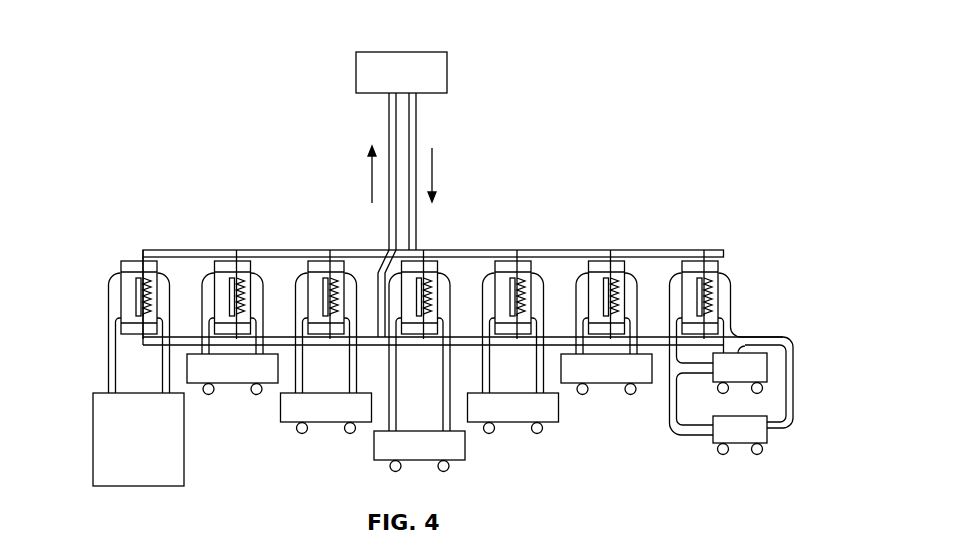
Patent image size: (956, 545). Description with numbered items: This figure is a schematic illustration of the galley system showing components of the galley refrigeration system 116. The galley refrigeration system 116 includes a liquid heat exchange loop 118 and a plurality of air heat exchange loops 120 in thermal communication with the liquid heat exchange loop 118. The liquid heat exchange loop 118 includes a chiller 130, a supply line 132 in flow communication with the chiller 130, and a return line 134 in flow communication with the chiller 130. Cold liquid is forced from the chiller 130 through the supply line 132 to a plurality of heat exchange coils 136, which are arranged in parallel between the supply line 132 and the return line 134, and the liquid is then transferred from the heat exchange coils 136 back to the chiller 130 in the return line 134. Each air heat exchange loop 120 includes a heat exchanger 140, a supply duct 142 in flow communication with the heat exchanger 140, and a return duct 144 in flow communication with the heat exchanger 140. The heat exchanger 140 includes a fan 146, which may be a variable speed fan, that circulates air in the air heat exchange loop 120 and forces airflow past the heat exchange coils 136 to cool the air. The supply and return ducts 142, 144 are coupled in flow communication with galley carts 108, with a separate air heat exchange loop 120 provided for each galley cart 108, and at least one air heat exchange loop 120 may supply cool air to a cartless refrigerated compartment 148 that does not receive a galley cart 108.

The galley cart 108 is at (240, 388).
The galley refrigeration system 116 is at (540, 91).
The liquid heat exchange loop 118 is at (318, 78).
The air heat exchange loop 120 is at (103, 298).
The chiller 130 is at (400, 52).
The supply line 132 is at (416, 133).
The return line 134 is at (389, 133).
The heat exchange coil 136 is at (160, 308).
The heat exchanger 140 is at (121, 270).
The supply duct 142 is at (163, 304).
The return duct 144 is at (112, 325).
The fan 146 is at (136, 279).
The refrigerated compartment 148 is at (138, 487).